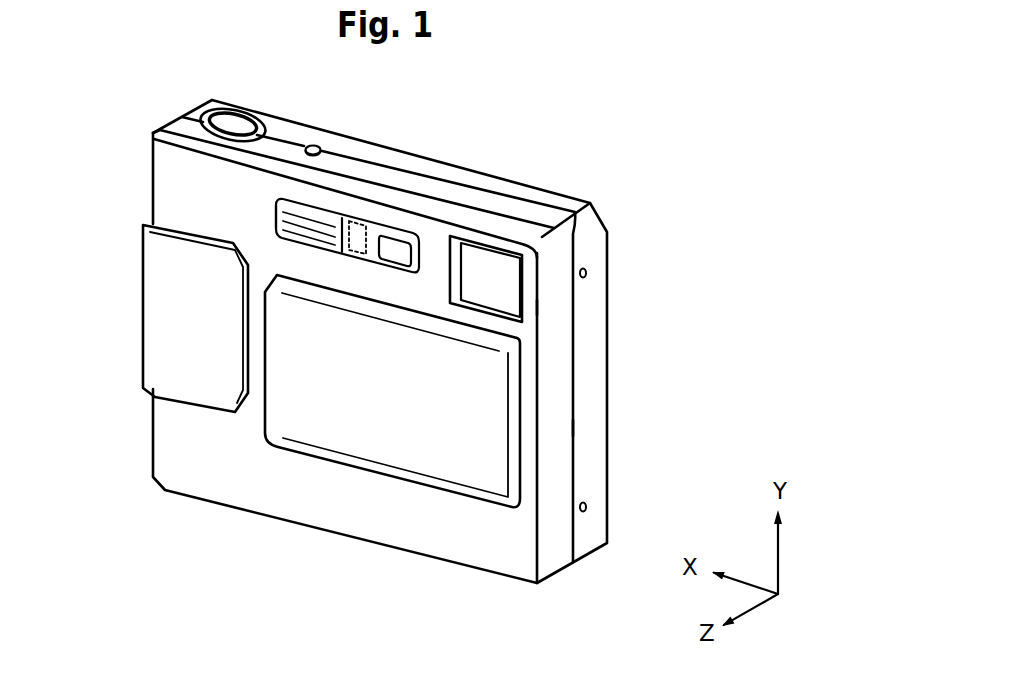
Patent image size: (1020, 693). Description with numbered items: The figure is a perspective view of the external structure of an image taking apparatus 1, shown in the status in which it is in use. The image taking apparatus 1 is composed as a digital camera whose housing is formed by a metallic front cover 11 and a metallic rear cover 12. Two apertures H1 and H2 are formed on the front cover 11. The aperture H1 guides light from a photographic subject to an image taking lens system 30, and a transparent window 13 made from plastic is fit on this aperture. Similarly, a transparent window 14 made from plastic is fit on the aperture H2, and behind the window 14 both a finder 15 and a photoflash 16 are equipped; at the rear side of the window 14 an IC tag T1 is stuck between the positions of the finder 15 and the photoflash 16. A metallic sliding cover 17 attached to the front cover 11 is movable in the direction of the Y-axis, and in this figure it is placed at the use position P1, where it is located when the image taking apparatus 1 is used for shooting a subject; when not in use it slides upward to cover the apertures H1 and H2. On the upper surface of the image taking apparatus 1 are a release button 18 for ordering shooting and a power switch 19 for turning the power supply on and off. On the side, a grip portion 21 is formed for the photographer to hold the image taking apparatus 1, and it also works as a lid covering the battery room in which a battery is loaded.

The image taking apparatus 1 is at (91, 90).
The front cover 11 is at (432, 540).
The rear cover 12 is at (595, 478).
The transparent window 13 is at (495, 262).
The transparent window 14 is at (282, 201).
The finder 15 is at (398, 237).
The photoflash 16 is at (308, 216).
The sliding cover 17 is at (365, 440).
The release button 18 is at (240, 119).
The power switch 19 is at (313, 143).
The grip portion 21 is at (168, 353).
The image taking lens system 30 is at (468, 258).
The aperture H1 is at (553, 307).
The aperture H2 is at (252, 212).
The use position P1 is at (556, 428).
The IC tag T1 is at (395, 190).